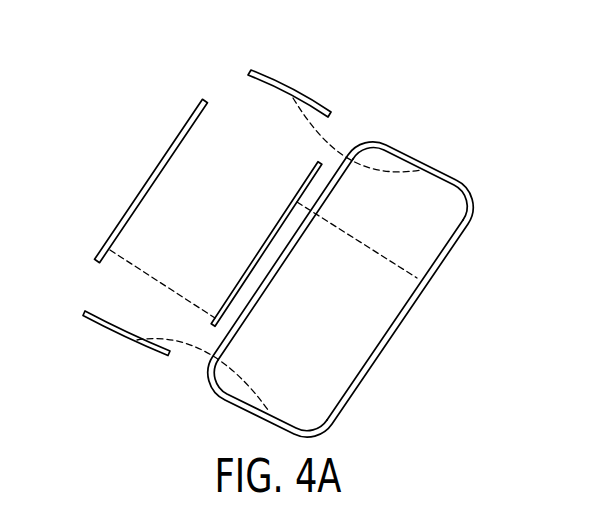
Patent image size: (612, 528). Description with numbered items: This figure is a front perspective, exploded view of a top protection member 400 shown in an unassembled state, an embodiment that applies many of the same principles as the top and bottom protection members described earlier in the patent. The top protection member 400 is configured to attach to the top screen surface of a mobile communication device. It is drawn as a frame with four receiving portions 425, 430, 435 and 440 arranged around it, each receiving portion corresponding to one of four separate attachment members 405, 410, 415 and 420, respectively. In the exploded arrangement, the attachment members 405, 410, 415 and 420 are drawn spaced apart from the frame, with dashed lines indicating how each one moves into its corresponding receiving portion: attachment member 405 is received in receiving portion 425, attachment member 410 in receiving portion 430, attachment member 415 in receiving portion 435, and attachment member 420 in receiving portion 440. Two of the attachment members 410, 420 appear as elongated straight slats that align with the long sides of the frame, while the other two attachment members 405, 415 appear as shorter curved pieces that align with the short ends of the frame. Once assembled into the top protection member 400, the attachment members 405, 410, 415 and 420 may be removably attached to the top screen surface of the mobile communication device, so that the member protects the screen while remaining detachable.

The top protection member 400 is at (409, 312).
The attachment member 405 is at (123, 341).
The attachment member 410 is at (148, 173).
The attachment member 415 is at (299, 89).
The attachment member 420 is at (263, 245).
The receiving portion 425 is at (283, 422).
The receiving portion 430 is at (278, 274).
The receiving portion 435 is at (421, 171).
The receiving portion 440 is at (387, 332).